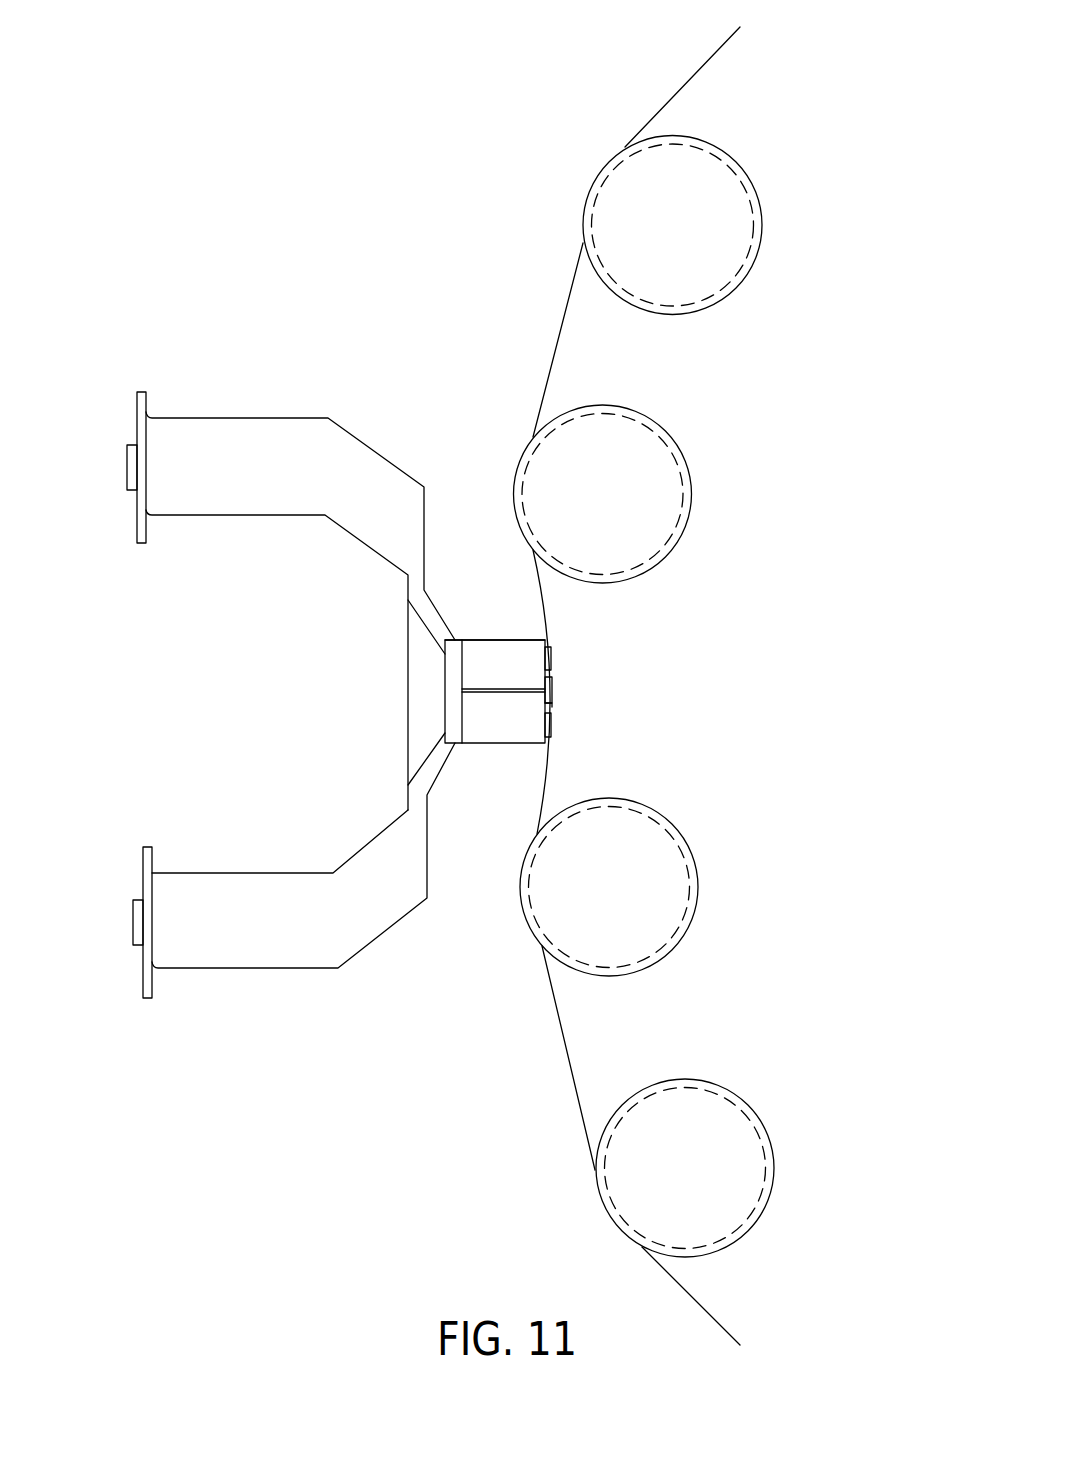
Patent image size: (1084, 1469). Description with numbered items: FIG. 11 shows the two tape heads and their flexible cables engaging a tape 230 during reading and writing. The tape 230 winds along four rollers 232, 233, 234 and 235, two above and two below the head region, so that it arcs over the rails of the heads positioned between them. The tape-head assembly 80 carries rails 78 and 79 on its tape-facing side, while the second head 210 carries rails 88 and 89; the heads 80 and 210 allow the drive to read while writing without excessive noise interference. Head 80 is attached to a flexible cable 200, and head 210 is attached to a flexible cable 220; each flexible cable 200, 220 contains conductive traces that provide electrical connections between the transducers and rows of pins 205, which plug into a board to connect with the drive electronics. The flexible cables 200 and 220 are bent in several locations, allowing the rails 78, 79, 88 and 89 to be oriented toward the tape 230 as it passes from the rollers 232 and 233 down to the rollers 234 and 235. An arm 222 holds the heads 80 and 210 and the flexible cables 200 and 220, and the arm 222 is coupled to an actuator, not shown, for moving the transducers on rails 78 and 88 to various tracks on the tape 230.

The tape 230 is at (662, 110).
The roller 232 is at (728, 297).
The roller 233 is at (685, 533).
The roller 234 is at (670, 950).
The roller 235 is at (758, 1222).
The flexible cable 200 is at (278, 425).
The pins 205 is at (126, 468).
The flexible cable 220 is at (287, 960).
The arm 222 is at (448, 695).
The head 210 is at (517, 745).
The tape-head assembly 80 is at (508, 638).
The rail 79 is at (550, 643).
The rail 78 is at (552, 672).
The rail 88 is at (552, 707).
The rail 89 is at (550, 738).